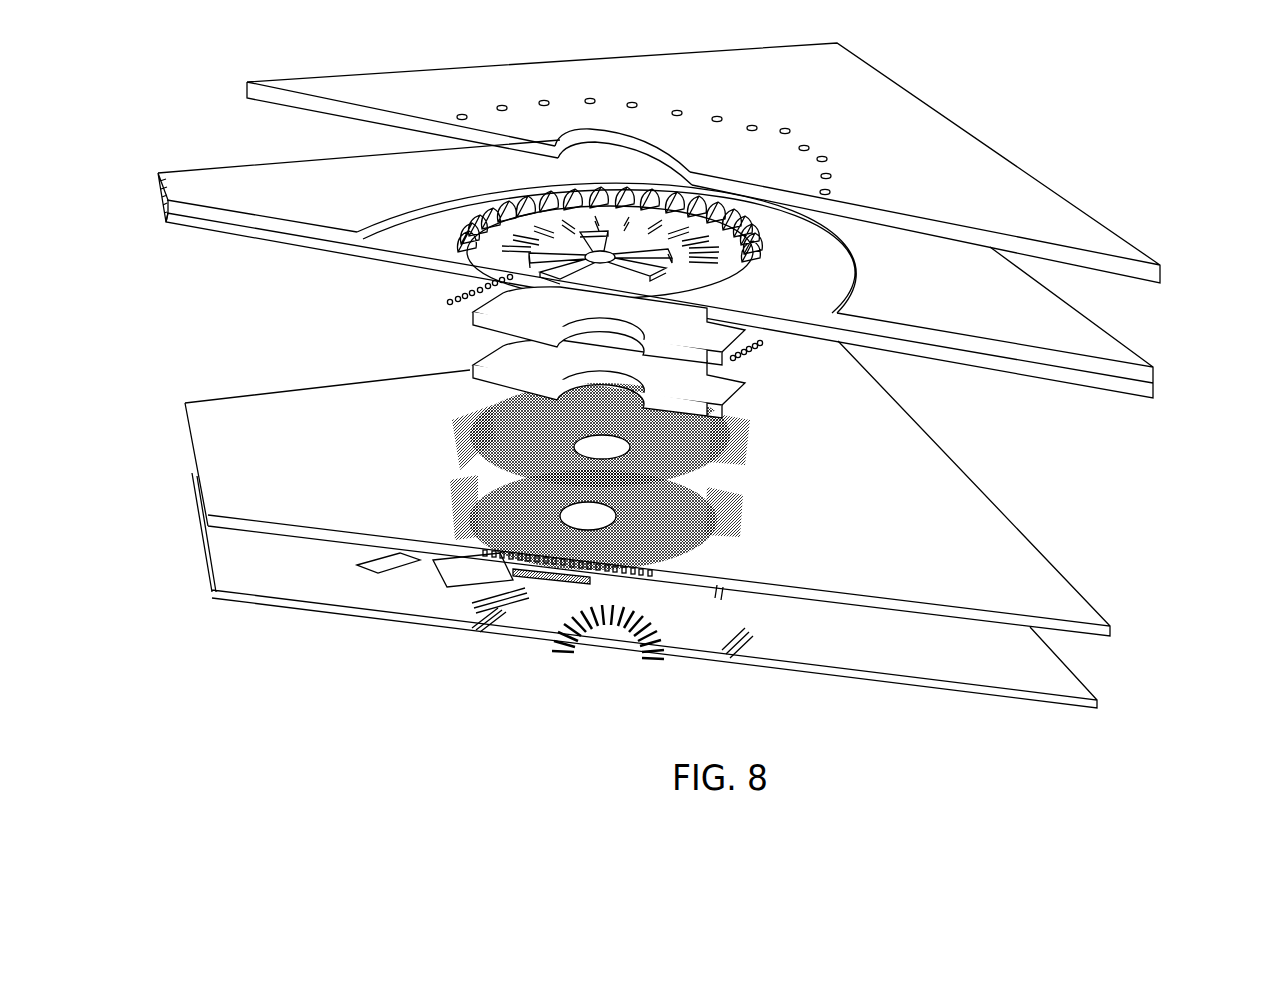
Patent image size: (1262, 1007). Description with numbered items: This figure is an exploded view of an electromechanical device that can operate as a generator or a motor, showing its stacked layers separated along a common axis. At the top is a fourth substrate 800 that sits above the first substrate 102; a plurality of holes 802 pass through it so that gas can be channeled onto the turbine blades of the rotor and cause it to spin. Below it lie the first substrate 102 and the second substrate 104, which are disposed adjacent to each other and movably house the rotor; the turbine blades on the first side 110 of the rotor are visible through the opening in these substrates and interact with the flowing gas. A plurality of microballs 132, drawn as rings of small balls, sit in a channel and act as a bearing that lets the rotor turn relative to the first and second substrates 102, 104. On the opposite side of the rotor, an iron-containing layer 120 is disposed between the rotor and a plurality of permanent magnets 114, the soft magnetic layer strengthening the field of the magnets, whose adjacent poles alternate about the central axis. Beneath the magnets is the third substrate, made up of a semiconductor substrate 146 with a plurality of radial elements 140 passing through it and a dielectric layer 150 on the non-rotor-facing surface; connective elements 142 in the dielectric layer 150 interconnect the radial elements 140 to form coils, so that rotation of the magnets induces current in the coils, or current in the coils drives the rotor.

The fourth substrate 800 is at (1090, 215).
The holes 802 is at (803, 147).
The first substrate 102 is at (1130, 350).
The second substrate 104 is at (1108, 392).
The first side of the rotor 110 is at (455, 272).
The microballs 132 is at (444, 287).
The iron-containing layer 120 is at (460, 323).
The permanent magnets 114 is at (458, 362).
The radial elements 140 is at (434, 456).
The semiconductor substrate 146 is at (1056, 563).
The dielectric layer 150 is at (323, 608).
The connective elements 142 is at (757, 655).